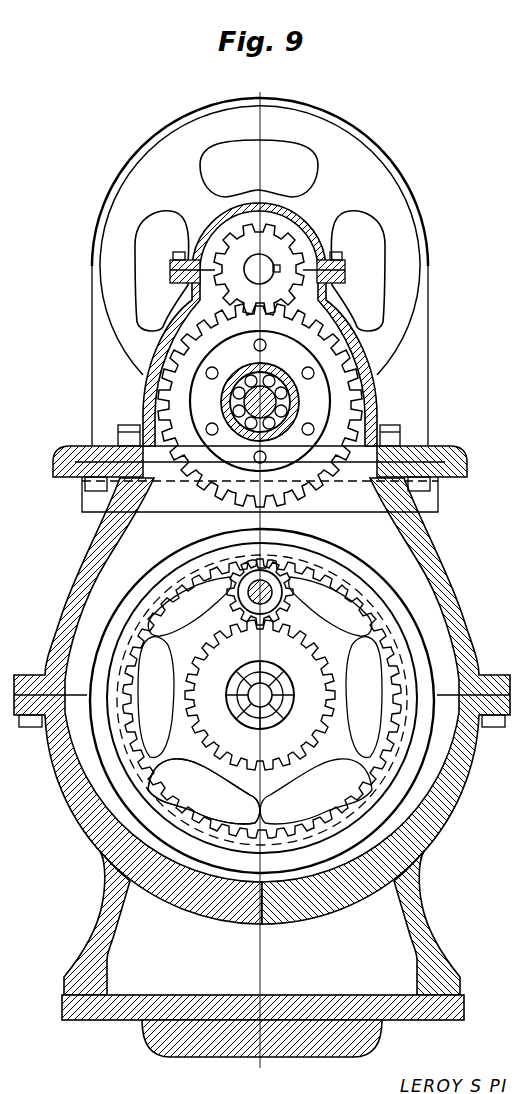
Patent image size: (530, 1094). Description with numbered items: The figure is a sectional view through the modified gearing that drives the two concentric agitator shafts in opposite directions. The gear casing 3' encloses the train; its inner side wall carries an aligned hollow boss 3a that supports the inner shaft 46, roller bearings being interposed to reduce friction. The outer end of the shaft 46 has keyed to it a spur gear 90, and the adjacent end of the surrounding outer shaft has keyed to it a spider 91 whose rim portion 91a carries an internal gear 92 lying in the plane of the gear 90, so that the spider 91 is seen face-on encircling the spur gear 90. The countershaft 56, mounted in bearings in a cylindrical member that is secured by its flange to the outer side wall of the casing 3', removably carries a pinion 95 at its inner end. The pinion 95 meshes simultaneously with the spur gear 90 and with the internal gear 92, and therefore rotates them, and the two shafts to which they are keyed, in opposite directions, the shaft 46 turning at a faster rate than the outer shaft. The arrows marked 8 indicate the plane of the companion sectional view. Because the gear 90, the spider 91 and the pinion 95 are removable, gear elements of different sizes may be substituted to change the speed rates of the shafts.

The gear casing 3' is at (262, 767).
The hollow boss 3a is at (150, 503).
The section line 8- 8 is at (242, 1083).
The shaft 46 is at (305, 712).
The countershaft 56 is at (226, 597).
The spur gear 90 is at (193, 693).
The spider 91 is at (349, 688).
The rim portion 91a is at (208, 855).
The internal gear 92 is at (216, 816).
The pinion 95 is at (293, 596).